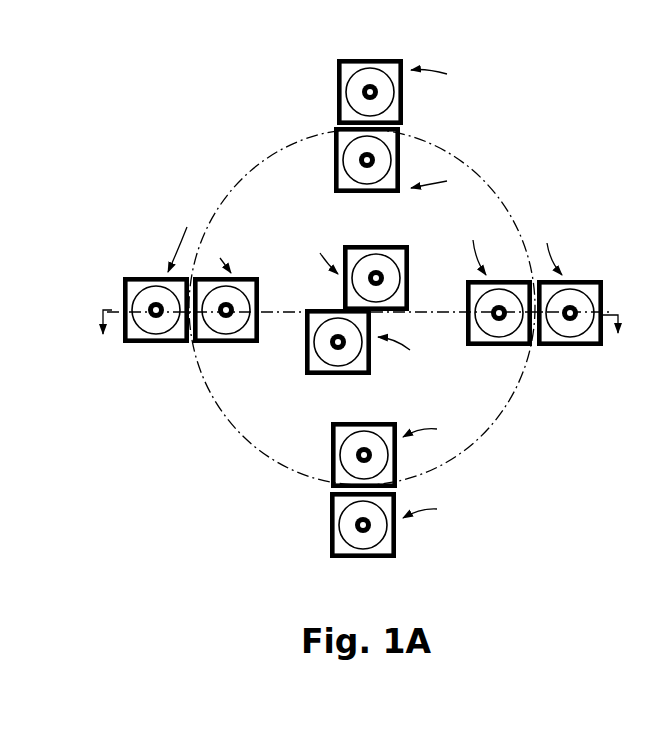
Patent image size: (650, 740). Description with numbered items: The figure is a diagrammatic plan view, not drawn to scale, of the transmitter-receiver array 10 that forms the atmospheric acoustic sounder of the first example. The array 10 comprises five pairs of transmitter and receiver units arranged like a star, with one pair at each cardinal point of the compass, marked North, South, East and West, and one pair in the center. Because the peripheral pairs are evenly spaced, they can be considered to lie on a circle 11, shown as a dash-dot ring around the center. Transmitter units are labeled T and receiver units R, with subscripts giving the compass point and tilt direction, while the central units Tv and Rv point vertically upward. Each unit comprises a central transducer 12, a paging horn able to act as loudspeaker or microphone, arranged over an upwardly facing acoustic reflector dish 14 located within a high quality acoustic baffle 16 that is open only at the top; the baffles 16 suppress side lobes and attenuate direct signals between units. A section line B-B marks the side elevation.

The transmitter-receiver array 10 is at (200, 163).
The circle 11 is at (509, 206).
The central transducer 12 is at (378, 91).
The acoustic reflector dish 14 is at (358, 143).
The acoustic baffle 16 is at (337, 80).